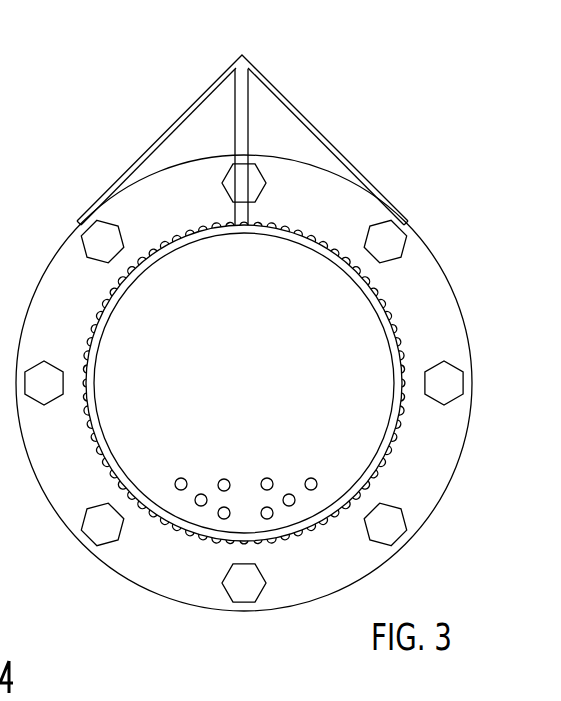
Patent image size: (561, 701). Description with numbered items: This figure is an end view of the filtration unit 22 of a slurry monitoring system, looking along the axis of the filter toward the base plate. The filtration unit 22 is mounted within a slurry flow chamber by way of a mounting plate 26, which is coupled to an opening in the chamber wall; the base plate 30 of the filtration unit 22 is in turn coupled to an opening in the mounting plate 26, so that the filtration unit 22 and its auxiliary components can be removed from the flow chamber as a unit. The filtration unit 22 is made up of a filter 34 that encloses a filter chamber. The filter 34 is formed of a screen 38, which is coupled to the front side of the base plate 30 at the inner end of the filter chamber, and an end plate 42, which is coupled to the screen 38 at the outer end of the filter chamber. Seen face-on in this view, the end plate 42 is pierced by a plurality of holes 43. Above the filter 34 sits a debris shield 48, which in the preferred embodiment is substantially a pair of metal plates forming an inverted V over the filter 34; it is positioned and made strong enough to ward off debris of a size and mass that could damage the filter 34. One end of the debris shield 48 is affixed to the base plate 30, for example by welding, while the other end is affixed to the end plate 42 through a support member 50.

The filtration unit 22 is at (441, 588).
The mounting plate 26 is at (438, 167).
The base plate 30 is at (445, 316).
The filter 34 is at (85, 411).
The screen 38 is at (293, 230).
The end plate 42 is at (290, 395).
The holes 43 is at (201, 494).
The debris shield 48 is at (306, 118).
The support member 50 is at (246, 157).